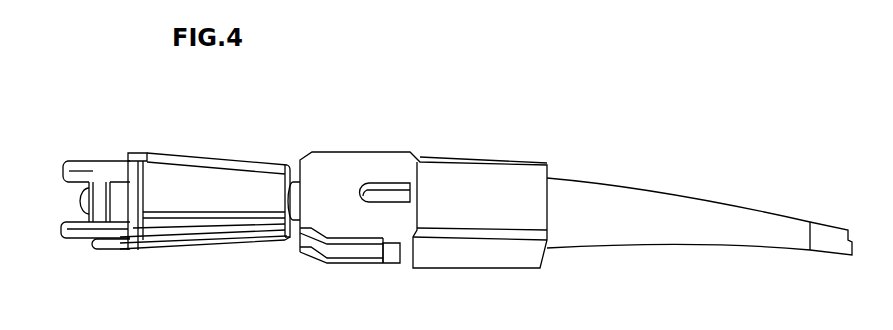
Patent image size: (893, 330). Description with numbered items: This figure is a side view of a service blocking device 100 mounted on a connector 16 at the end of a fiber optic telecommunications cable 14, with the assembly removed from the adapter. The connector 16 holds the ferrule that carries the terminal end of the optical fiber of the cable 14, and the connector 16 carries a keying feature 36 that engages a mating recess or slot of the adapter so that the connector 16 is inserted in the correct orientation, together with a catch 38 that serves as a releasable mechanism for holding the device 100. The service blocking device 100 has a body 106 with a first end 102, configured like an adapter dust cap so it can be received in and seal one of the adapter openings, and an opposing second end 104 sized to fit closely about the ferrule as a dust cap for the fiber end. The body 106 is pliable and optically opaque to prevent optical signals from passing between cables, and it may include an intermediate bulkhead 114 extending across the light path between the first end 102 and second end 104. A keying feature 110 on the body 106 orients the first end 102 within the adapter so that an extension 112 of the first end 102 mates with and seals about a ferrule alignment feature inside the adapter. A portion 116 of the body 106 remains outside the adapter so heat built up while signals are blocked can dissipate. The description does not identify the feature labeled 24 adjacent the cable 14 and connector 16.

The fiber optic telecommunications cable 14 is at (828, 242).
The connector 16 is at (407, 230).
The boot 24 is at (665, 228).
The keying feature 36 is at (383, 188).
The catch 38 is at (345, 243).
The service blocking device 100 is at (178, 223).
The first end 102 is at (75, 228).
The second end 104 is at (295, 190).
The body 106 is at (163, 180).
The keying feature 110 is at (98, 245).
The extension 112 is at (79, 201).
The intermediate bulkhead 114 is at (134, 207).
The portion 116 is at (205, 180).